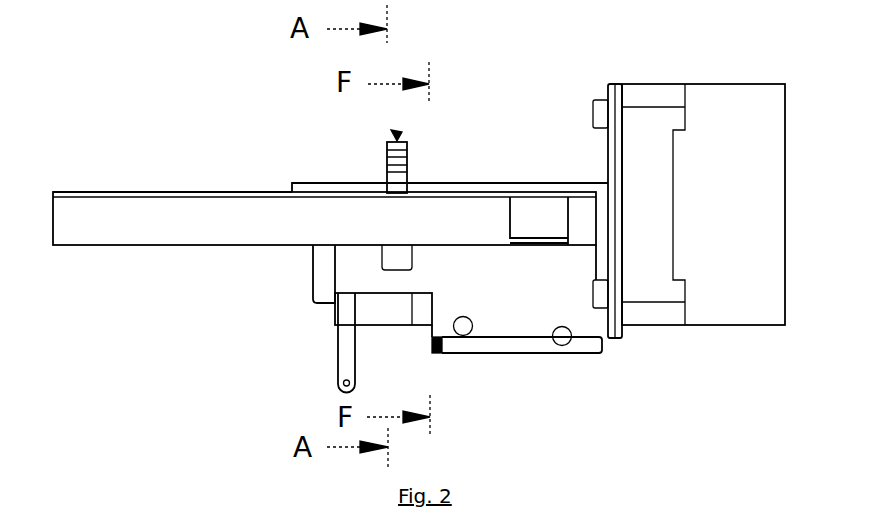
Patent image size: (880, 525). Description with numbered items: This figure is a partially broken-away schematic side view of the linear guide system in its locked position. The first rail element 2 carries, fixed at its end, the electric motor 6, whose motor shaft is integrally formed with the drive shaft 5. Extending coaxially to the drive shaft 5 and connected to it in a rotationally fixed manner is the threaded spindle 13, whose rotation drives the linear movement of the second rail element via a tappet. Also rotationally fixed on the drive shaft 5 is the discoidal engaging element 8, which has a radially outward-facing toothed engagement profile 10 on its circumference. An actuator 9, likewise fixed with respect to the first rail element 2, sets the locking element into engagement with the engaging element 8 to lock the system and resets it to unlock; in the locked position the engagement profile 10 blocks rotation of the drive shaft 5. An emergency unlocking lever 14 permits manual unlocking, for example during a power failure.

The first rail element 2 is at (115, 222).
The drive shaft 5 is at (545, 183).
The electric motor 6 is at (731, 130).
The engaging element 8 is at (400, 166).
The actuator 9 is at (538, 368).
The toothed engagement profile 10 is at (394, 133).
The threaded spindle 13 is at (170, 191).
The emergency unlocking lever 14 is at (345, 357).